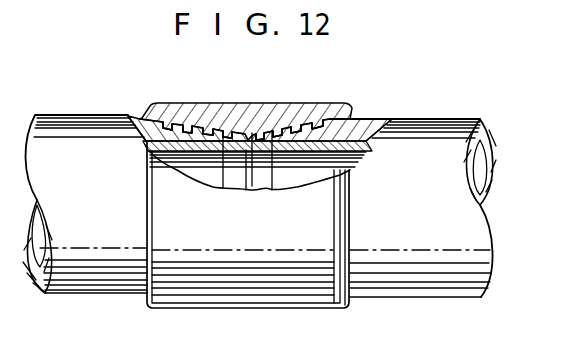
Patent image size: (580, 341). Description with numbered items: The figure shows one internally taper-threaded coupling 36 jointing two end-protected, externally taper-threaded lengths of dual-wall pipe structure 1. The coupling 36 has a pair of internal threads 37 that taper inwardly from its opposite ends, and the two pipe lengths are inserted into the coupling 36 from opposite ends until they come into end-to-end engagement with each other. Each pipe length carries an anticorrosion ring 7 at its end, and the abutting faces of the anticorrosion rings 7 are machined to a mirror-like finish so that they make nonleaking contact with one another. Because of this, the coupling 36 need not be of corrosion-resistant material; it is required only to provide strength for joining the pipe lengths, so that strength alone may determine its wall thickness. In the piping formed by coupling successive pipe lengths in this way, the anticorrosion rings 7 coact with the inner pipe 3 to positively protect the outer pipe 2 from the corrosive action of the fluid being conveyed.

The dual-wall pipe structure 1 is at (77, 114).
The outer pipe 2 is at (142, 118).
The inner pipe 3 is at (143, 148).
The anticorrosion ring 7 is at (262, 146).
The internally taper-threaded coupling 36 is at (247, 101).
The internal threads 37 is at (182, 120).